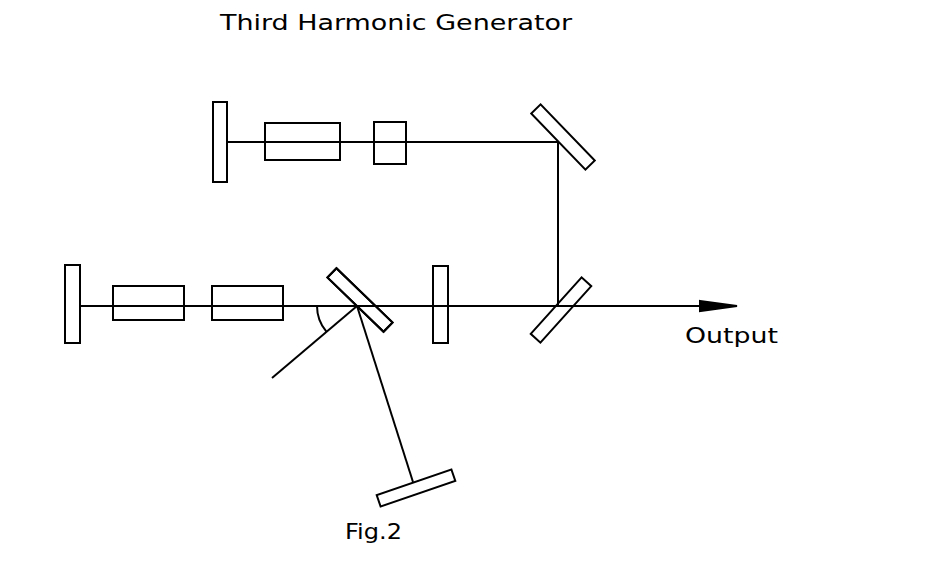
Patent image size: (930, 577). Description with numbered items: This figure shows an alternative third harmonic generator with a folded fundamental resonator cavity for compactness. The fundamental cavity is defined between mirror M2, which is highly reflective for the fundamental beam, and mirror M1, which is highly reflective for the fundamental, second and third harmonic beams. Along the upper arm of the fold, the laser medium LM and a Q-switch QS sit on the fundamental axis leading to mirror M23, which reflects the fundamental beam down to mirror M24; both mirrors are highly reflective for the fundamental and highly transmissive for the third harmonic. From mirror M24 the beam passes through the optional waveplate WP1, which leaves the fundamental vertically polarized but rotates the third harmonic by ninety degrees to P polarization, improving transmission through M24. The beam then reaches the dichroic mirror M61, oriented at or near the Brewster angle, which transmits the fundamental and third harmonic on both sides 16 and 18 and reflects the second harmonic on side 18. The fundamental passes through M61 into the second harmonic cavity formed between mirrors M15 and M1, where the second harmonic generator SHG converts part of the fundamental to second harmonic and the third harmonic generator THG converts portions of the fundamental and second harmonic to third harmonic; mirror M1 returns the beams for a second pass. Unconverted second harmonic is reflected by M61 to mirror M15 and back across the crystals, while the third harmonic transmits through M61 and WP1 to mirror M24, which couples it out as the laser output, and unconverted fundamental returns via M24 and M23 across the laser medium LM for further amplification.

The side of mirror M61 16 is at (359, 300).
The side of mirror M61 18 is at (314, 342).
The mirror M1 is at (76, 288).
The mirror M2 is at (218, 127).
The second harmonic generator SHG is at (148, 290).
The third harmonic generator THG is at (247, 290).
The dichroic mirror M61 is at (359, 285).
The waveplate WP1 is at (455, 289).
The laser medium LM is at (302, 127).
The Q-switch QS is at (389, 129).
The mirror M23 is at (559, 126).
The mirror M24 is at (575, 298).
The mirror M15 is at (420, 473).